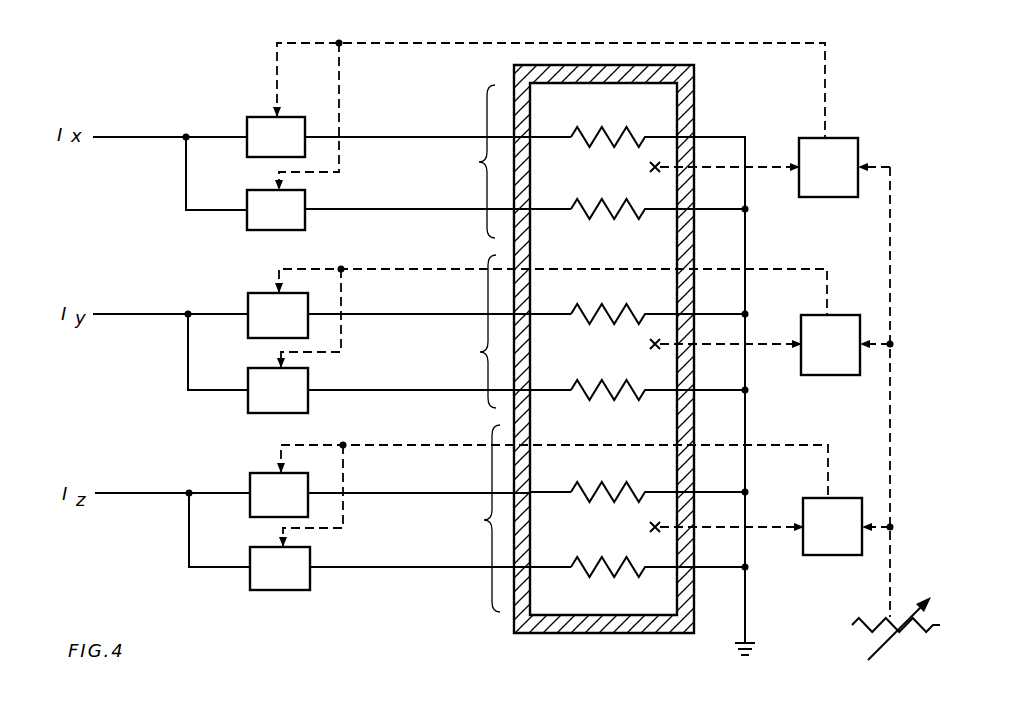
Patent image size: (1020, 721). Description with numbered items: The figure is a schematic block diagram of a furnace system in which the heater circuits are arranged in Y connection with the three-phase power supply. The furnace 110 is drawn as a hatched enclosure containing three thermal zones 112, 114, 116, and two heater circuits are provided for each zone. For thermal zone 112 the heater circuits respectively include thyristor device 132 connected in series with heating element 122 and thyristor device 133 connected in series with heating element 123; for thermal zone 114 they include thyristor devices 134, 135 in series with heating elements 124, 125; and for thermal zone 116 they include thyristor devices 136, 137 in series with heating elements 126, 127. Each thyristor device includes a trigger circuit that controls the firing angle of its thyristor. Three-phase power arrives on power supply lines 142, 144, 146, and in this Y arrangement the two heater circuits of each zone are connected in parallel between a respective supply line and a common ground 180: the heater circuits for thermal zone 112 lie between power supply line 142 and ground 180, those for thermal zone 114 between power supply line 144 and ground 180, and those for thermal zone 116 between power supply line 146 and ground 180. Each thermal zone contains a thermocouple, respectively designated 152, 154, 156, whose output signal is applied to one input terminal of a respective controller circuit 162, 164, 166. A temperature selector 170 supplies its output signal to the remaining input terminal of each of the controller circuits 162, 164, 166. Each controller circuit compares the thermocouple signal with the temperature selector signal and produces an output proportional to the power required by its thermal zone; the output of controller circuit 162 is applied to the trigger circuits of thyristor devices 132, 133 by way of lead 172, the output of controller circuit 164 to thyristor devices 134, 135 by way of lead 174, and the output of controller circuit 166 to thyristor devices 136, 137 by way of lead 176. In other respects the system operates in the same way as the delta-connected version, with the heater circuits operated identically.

The furnace 110 is at (695, 95).
The thermal zone 112 is at (470, 161).
The thermal zone 114 is at (473, 331).
The thermal zone 116 is at (474, 518).
The heating element 122 is at (589, 113).
The heating element 123 is at (577, 199).
The heating element 124 is at (588, 290).
The heating element 125 is at (588, 366).
The heating element 126 is at (590, 470).
The heating element 127 is at (590, 543).
The thyristor device 132 is at (253, 117).
The thyristor device 133 is at (250, 190).
The thyristor device 134 is at (249, 296).
The thyristor device 135 is at (250, 372).
The thyristor device 136 is at (252, 476).
The thyristor device 137 is at (252, 550).
The power supply line 142 is at (140, 121).
The power supply line 144 is at (111, 317).
The power supply line 146 is at (118, 495).
The thermocouple 152 is at (643, 169).
The thermocouple 154 is at (643, 347).
The thermocouple 156 is at (645, 530).
The controller circuit 162 is at (845, 138).
The controller circuit 164 is at (838, 315).
The controller circuit 166 is at (862, 485).
The temperature selector 170 is at (862, 636).
The lead 172 is at (392, 43).
The lead 174 is at (394, 269).
The lead 176 is at (388, 444).
The common ground 180 is at (743, 644).